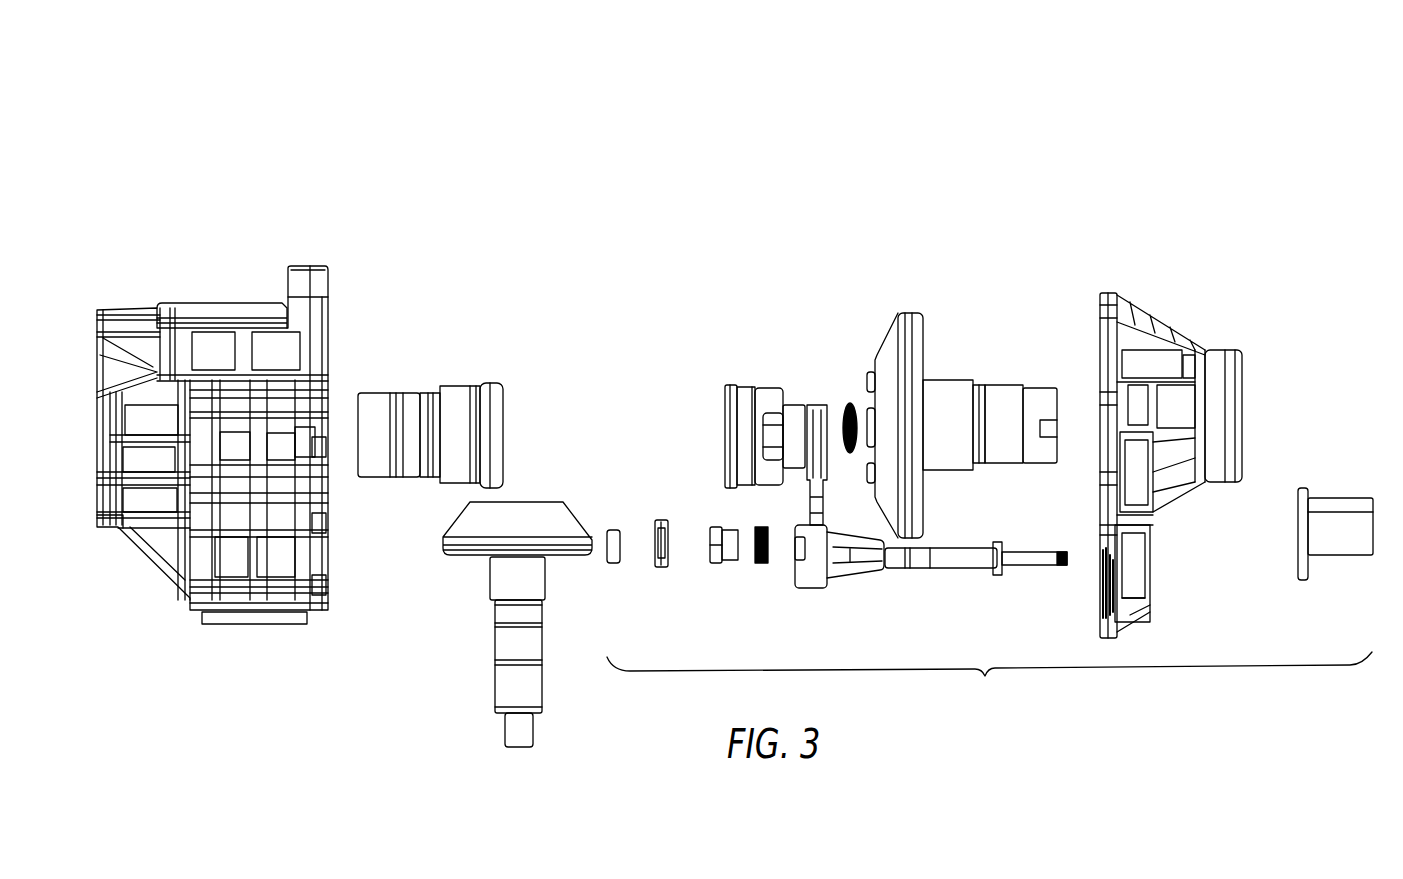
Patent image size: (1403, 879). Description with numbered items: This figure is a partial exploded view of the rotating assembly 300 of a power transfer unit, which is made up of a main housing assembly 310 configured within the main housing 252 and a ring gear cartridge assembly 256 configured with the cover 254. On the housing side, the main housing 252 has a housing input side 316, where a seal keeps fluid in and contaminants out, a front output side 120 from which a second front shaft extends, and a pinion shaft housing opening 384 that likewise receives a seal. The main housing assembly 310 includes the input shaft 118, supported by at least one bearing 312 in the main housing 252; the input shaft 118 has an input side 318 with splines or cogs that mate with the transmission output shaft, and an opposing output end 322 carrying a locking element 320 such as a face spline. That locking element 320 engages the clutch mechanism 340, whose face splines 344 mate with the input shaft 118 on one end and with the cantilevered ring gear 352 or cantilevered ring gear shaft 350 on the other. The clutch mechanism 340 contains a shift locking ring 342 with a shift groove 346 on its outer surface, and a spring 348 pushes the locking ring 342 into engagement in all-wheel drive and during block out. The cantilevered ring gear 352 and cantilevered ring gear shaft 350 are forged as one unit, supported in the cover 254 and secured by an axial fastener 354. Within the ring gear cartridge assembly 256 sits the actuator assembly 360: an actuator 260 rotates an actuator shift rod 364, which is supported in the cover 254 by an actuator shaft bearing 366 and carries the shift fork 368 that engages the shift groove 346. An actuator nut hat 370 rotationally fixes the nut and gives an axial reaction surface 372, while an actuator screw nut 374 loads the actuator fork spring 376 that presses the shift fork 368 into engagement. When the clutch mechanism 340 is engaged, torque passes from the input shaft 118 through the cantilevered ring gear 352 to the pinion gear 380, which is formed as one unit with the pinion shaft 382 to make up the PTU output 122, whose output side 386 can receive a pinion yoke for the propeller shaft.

The rotating assembly 300 is at (718, 109).
The main housing assembly 310 is at (360, 200).
The ring gear cartridge assembly 256 is at (1022, 245).
The main housing 252 is at (225, 305).
The housing input side 316 is at (95, 432).
The pinion shaft housing opening 384 is at (257, 623).
The bearing 312 is at (461, 417).
The input side 318 is at (358, 415).
The locking element 320 is at (506, 422).
The output end 322 is at (516, 450).
The input shaft 118 is at (432, 487).
The pinion gear 380 is at (480, 530).
The pinion shaft 382 is at (495, 645).
The output side 386 is at (508, 720).
The PTU output 122 is at (513, 674).
The actuator shaft bearing 366 is at (612, 570).
The actuator nut hat 370 is at (661, 575).
The axial reaction surface 372 is at (673, 520).
The actuator screw nut 374 is at (718, 570).
The actuator fork spring 376 is at (763, 570).
The shift fork 368 is at (857, 590).
The actuator shift rod 364 is at (962, 578).
The clutch mechanism 340 is at (730, 395).
The face splines 344 is at (716, 418).
The shift groove 346 is at (738, 398).
The shift locking ring 342 is at (764, 387).
The spring 348 is at (852, 402).
The cantilevered ring gear 352 is at (906, 315).
The cantilevered ring gear shaft 350 is at (1010, 422).
The axial fastener 354 is at (1066, 433).
The cover 254 is at (1204, 465).
The front output side 120 is at (1250, 395).
The actuator 260 is at (1337, 553).
The actuator assembly 360 is at (989, 680).